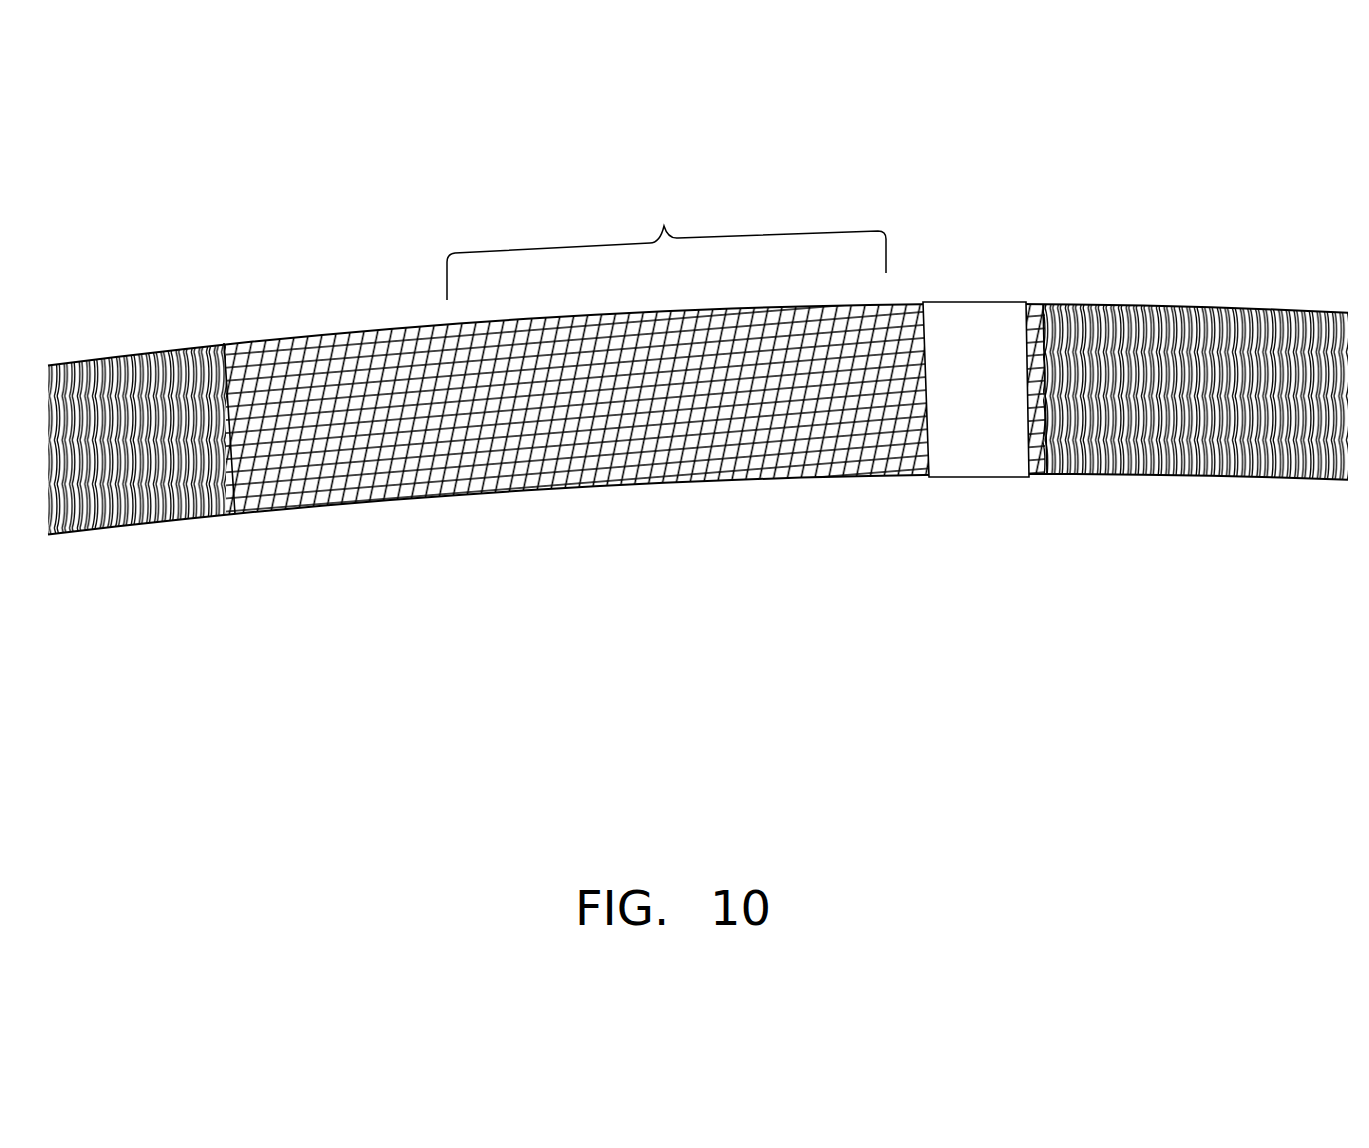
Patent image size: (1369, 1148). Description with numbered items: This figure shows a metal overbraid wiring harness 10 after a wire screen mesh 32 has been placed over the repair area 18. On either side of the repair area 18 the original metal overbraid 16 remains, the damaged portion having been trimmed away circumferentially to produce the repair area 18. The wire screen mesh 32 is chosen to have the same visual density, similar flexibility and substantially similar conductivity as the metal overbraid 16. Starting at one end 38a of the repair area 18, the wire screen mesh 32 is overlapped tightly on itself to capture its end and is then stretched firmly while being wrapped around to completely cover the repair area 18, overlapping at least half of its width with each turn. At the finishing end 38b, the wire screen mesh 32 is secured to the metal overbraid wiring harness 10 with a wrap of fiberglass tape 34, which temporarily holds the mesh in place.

The metal overbraid wiring harness 10 is at (162, 108).
The metal overbraid 16 is at (136, 357).
The repair area 18 is at (663, 230).
The wire screen mesh 32 is at (398, 350).
The fiberglass tape 34 is at (970, 318).
The end of the repair area 38a is at (232, 342).
The finishing end 38b is at (1040, 305).